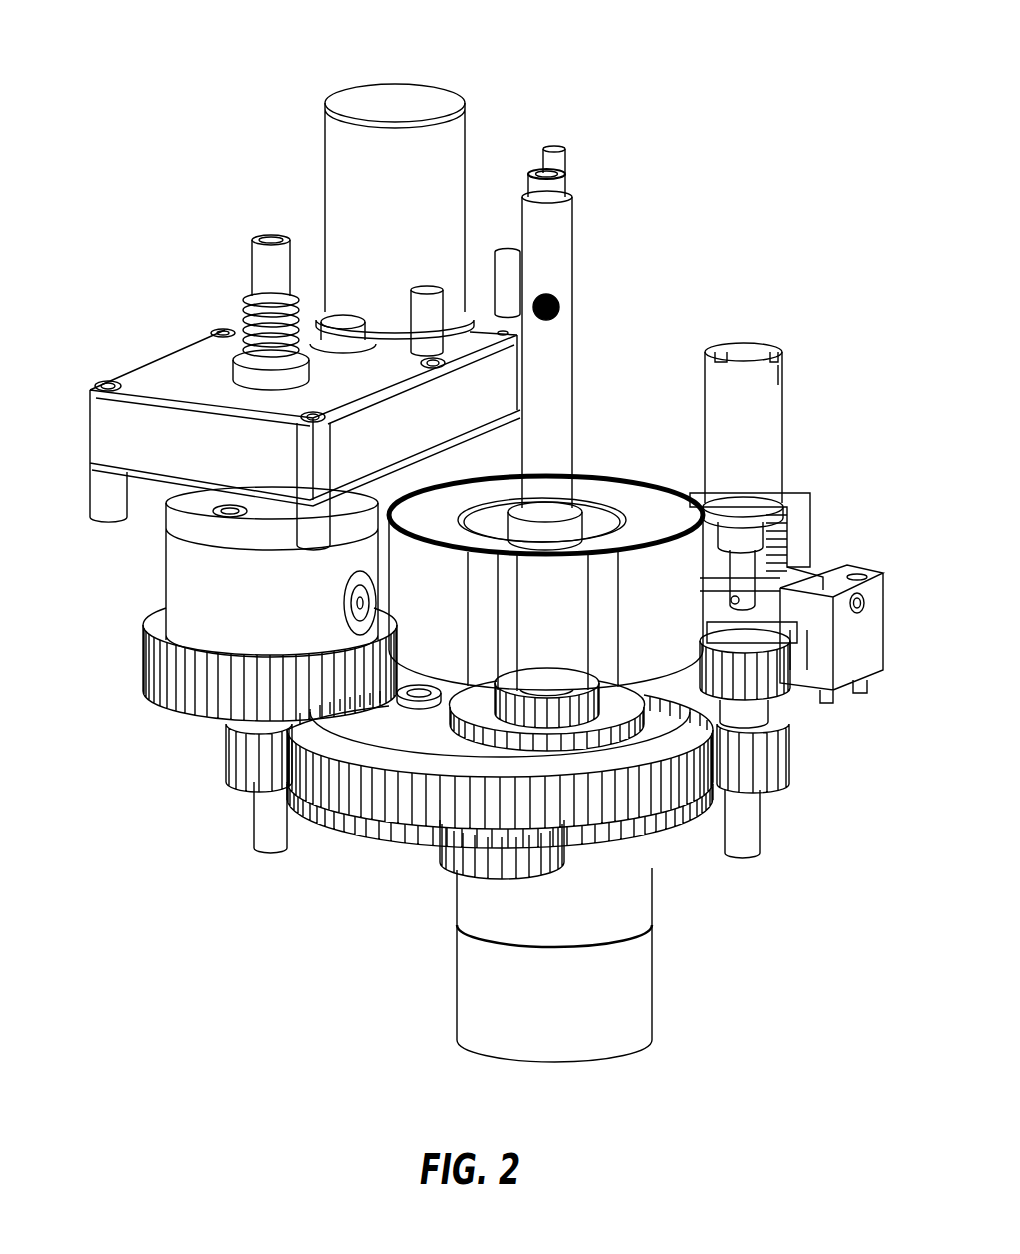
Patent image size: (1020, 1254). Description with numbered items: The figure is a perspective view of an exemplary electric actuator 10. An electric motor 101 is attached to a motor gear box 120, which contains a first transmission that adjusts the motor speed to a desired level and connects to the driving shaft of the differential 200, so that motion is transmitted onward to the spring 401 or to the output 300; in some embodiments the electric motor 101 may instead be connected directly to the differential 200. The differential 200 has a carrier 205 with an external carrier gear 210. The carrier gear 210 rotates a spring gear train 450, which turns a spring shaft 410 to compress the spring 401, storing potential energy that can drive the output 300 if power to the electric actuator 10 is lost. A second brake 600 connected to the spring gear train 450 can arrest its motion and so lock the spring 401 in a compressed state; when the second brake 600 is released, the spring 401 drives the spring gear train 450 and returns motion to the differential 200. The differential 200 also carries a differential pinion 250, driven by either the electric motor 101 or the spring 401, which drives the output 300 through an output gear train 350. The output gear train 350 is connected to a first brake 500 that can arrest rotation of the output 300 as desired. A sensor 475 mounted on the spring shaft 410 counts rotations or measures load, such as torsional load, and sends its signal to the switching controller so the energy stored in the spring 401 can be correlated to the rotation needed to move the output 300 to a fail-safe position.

The electric actuator 10 is at (771, 77).
The electric motor 101 is at (459, 76).
The motor gear box 120 is at (148, 370).
The spring shaft 410 is at (574, 225).
The sensor 475 is at (558, 307).
The spring 401 is at (628, 468).
The first brake 500 is at (788, 332).
The second brake 600 is at (697, 497).
The differential 200 is at (220, 572).
The carrier 205 is at (172, 563).
The carrier gear 210 is at (150, 678).
The differential pinion 250 is at (226, 768).
The output gear train 350 is at (337, 818).
The spring gear train 450 is at (453, 687).
The output 300 is at (665, 960).